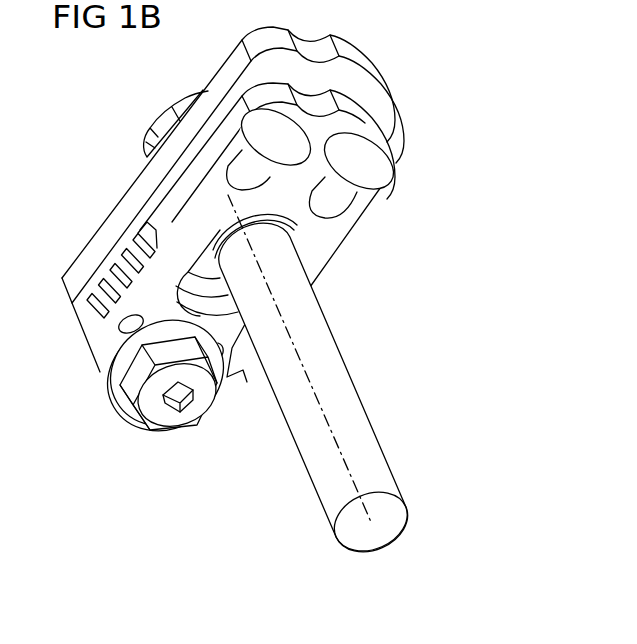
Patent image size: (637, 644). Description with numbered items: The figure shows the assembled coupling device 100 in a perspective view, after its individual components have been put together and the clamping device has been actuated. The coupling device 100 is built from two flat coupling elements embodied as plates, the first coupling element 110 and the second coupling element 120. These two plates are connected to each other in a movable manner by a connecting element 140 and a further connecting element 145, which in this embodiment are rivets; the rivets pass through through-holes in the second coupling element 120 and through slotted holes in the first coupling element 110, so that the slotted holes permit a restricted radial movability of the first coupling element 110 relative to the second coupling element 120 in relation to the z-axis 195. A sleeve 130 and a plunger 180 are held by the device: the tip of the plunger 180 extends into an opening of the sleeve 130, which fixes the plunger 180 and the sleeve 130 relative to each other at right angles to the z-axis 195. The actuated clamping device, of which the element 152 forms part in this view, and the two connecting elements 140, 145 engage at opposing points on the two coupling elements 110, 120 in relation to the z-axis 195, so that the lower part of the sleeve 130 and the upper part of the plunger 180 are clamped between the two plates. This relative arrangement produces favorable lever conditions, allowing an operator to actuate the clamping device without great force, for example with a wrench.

The coupling device 100 is at (430, 83).
The first coupling element 110 is at (322, 244).
The second coupling element 120 is at (128, 203).
The sleeve 130 is at (158, 133).
The connecting element 140 is at (278, 140).
The further connecting element 145 is at (375, 170).
The nut 152 is at (150, 410).
The plunger 180 is at (337, 380).
The z-axis 195 is at (328, 423).